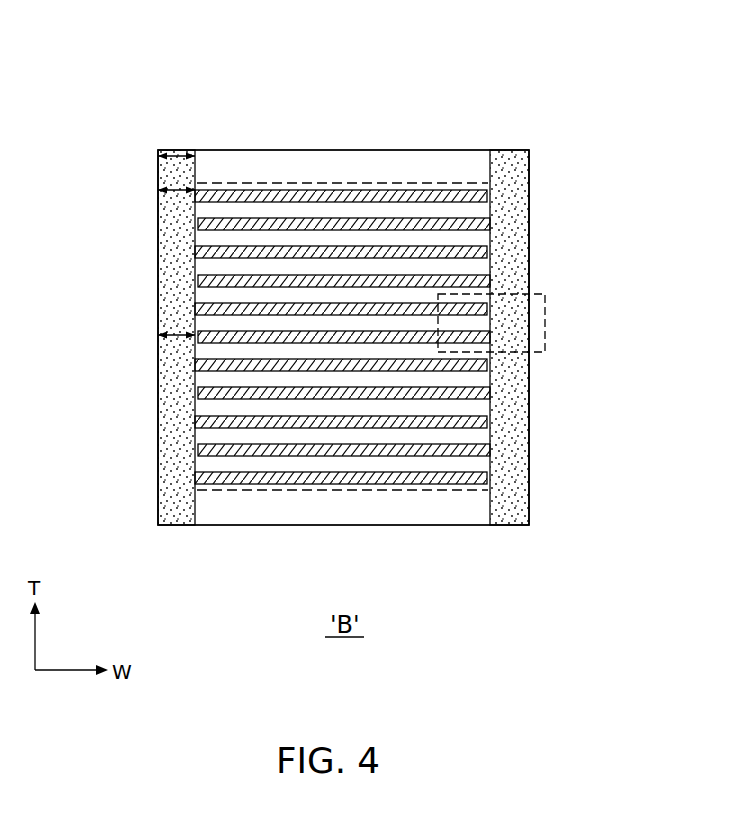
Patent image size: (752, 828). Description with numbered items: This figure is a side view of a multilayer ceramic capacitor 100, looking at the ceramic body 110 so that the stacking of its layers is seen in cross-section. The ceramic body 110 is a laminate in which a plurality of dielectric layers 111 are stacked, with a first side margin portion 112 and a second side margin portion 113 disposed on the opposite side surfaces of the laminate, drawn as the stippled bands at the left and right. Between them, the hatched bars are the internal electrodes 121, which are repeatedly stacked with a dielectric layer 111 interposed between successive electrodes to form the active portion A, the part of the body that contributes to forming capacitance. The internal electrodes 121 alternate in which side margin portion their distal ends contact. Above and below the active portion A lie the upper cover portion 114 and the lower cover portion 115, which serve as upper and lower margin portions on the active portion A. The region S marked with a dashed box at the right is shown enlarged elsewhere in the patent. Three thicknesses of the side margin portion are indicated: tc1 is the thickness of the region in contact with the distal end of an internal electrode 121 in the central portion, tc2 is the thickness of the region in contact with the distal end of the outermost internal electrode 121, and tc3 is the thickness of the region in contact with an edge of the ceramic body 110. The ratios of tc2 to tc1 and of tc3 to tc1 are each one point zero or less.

The multilayer ceramic capacitor 100 is at (354, 27).
The ceramic body 110 is at (357, 150).
The dielectric layer 111 is at (483, 240).
The first side margin portion 112 is at (167, 512).
The second side margin portion 113 is at (514, 512).
The upper cover portion 114 is at (458, 160).
The lower cover portion 115 is at (437, 512).
The first internal electrode 121 is at (483, 223).
The region S is at (549, 315).
The active portion A is at (492, 425).
The thickness tc1 is at (177, 338).
The thickness tc2 is at (177, 193).
The thickness tc3 is at (177, 159).